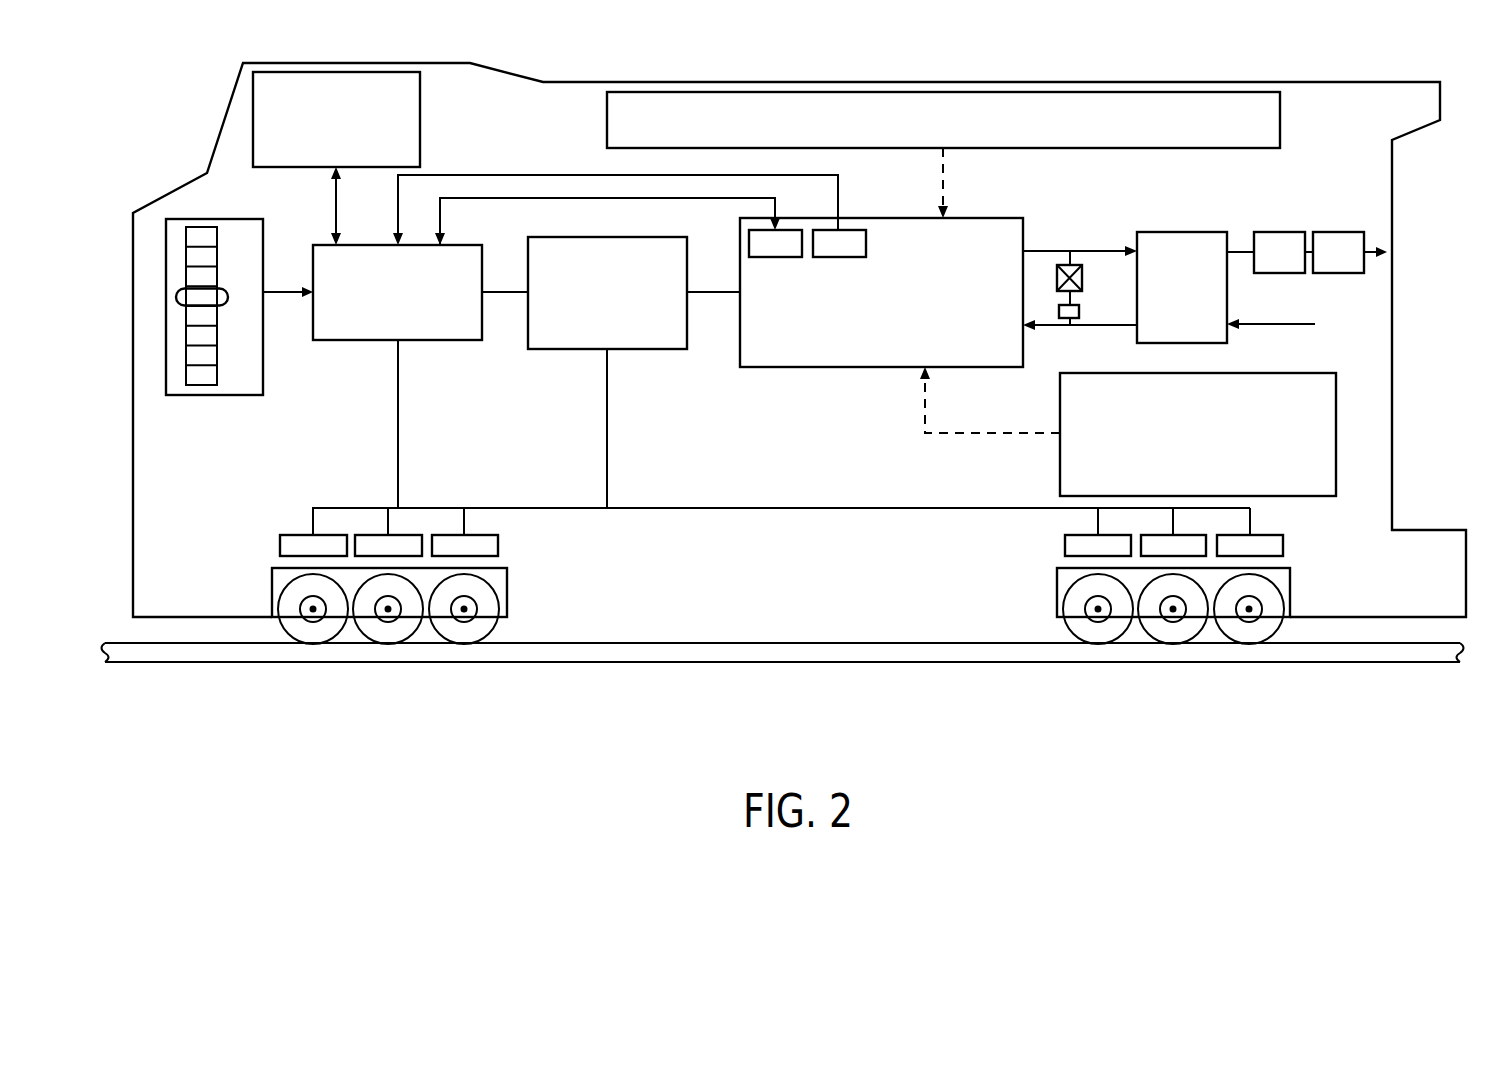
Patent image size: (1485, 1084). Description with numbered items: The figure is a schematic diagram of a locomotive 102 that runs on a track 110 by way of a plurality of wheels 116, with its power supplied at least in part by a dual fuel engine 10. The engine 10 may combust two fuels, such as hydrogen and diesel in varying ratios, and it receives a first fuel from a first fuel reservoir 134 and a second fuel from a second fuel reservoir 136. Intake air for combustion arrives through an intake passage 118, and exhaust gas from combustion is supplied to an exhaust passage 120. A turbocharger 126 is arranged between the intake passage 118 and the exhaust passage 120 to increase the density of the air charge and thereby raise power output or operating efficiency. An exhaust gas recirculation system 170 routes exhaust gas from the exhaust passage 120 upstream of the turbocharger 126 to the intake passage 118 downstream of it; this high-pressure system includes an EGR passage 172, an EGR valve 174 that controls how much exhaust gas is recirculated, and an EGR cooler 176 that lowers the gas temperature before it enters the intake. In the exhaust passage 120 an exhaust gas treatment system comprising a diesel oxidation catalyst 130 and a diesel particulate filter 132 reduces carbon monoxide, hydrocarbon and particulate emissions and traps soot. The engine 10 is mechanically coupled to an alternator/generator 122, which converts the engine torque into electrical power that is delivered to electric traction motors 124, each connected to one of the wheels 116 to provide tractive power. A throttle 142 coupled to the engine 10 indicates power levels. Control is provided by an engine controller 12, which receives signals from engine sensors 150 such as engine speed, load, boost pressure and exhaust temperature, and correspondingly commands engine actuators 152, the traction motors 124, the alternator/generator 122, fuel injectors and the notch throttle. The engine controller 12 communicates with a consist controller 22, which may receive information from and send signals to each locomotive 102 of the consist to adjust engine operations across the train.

The lead locomotive 102 is at (1095, 82).
The track 110 is at (1366, 662).
The wheels 116 is at (490, 598).
The electric traction motors 124 is at (498, 537).
The throttle 142 is at (190, 219).
The consist controller 22 is at (325, 157).
The engine controller 12 is at (386, 332).
The alternator/generator 122 is at (590, 319).
The engine 10 is at (871, 317).
The engine actuators 152 is at (618, 227).
The engine sensors 150 is at (629, 216).
The first fuel reservoir 134 is at (998, 133).
The second fuel reservoir 136 is at (1252, 446).
The turbocharger 126 is at (1165, 317).
The exhaust gas recirculation system 170 is at (1072, 240).
The EGR valve 174 is at (1082, 268).
The EGR passage 172 is at (1077, 303).
The EGR cooler 176 is at (1073, 326).
The exhaust passage 120 is at (1240, 250).
The diesel oxidation catalyst 130 is at (1262, 264).
The diesel particulate filter 132 is at (1321, 264).
The intake passage 118 is at (1262, 325).